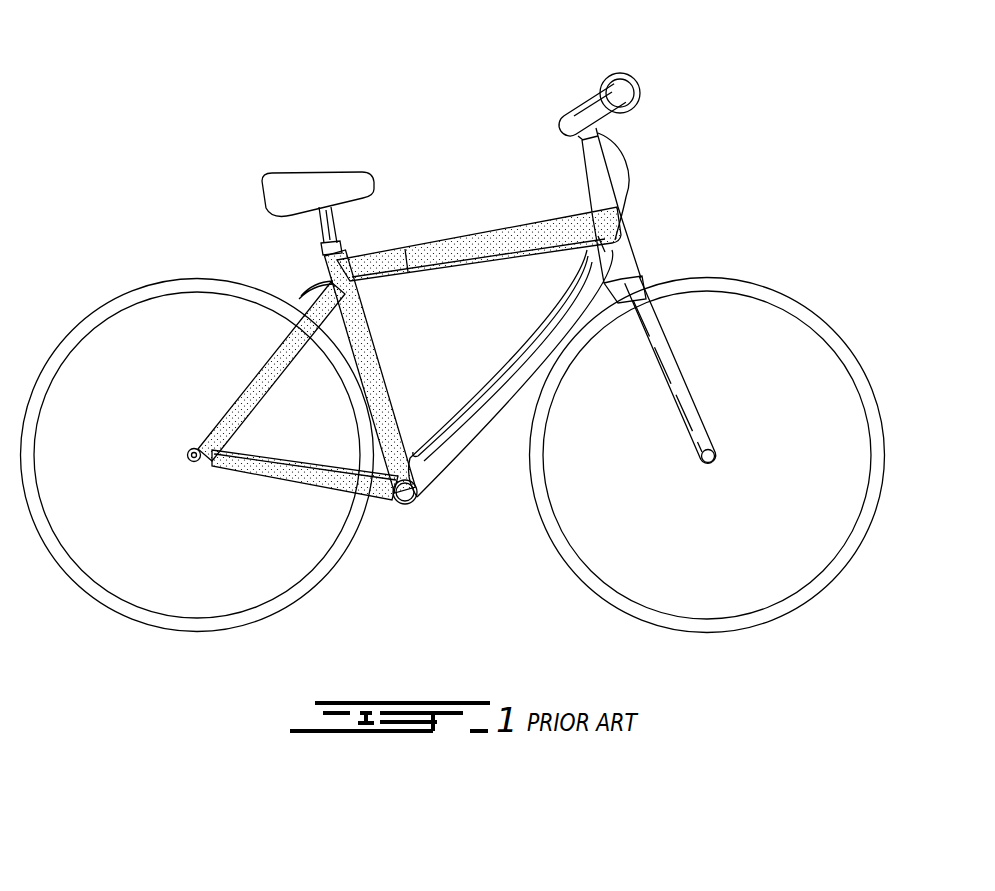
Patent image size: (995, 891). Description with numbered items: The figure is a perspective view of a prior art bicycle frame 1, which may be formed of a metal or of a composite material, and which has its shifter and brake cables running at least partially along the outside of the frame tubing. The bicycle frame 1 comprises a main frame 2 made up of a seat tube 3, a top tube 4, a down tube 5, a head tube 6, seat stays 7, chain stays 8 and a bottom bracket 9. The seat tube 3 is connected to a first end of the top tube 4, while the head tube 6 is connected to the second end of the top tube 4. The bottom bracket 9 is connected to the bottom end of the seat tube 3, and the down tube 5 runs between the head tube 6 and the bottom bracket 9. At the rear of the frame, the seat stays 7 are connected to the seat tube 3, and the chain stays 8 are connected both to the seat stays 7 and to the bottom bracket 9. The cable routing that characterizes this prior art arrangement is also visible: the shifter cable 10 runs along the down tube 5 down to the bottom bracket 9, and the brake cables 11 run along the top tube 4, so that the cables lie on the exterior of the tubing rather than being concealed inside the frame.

The bicycle frame 1 is at (453, 353).
The main frame 2 is at (431, 338).
The seat tube 3 is at (380, 398).
The top tube 4 is at (487, 249).
The down tube 5 is at (465, 427).
The head tube 6 is at (608, 226).
The seat stays 7 is at (233, 403).
The chain stays 8 is at (277, 468).
The bottom bracket 9 is at (407, 505).
The shifter cable 10 is at (502, 378).
The brake cables 11 is at (407, 262).